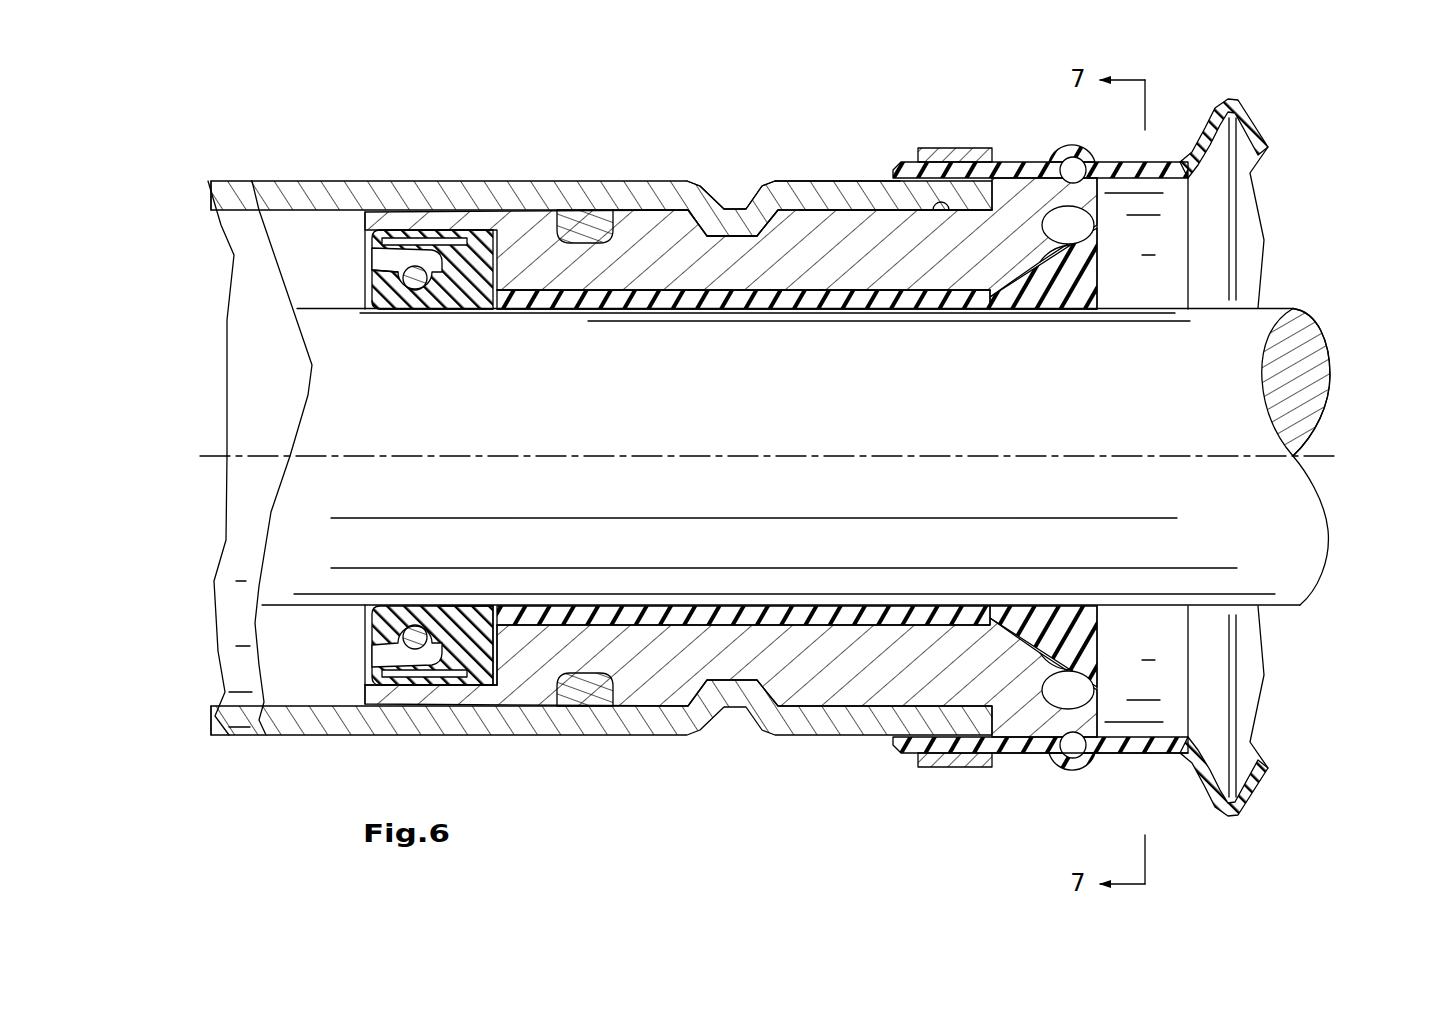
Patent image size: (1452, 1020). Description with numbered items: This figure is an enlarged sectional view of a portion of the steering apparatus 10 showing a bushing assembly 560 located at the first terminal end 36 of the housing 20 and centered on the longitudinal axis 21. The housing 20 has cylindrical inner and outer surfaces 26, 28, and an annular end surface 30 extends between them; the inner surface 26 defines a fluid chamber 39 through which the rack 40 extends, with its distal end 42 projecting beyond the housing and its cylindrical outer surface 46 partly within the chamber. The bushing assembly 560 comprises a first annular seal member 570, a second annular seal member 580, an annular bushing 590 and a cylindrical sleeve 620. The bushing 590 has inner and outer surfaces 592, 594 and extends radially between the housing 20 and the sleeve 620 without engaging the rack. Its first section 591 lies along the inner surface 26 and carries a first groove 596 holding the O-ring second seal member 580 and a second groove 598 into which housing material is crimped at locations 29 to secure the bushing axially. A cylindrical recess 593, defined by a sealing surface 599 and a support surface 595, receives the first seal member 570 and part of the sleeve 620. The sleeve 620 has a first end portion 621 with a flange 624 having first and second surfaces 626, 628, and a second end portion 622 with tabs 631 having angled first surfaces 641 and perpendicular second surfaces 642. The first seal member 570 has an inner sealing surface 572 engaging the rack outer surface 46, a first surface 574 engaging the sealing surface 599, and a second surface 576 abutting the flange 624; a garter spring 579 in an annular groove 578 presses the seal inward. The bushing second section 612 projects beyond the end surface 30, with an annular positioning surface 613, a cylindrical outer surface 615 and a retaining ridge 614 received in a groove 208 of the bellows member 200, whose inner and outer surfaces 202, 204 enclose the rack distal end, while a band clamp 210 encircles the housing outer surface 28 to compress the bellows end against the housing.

The steering apparatus 10 is at (262, 120).
The housing 20 is at (299, 192).
The longitudinal axis 21 is at (1340, 456).
The inner surface 26 is at (283, 212).
The outer surface 28 is at (268, 184).
The deformed material locations 29 is at (733, 203).
The end surface 30 is at (1020, 175).
The first terminal end 36 is at (807, 176).
The fluid chamber 39 is at (312, 672).
The rack 40 is at (1240, 423).
The distal end 42 is at (1283, 304).
The outer surface 46 is at (1277, 607).
The bellows member 200 is at (1260, 97).
The inner surface 202 is at (1252, 736).
The outer surface 204 is at (1124, 755).
The groove 208 is at (1062, 152).
The band clamp 210 is at (937, 762).
The bushing assembly 560 is at (590, 172).
The first annular seal member 570 is at (402, 604).
The inner sealing surface 572 is at (400, 310).
The first surface 574 is at (437, 232).
The second surface 576 is at (476, 608).
The annular groove 578 is at (370, 310).
The garter spring 579 is at (370, 275).
The second annular seal member 580 is at (604, 709).
The annular bushing 590 is at (866, 205).
The first section 591 is at (578, 312).
The inner surface 592 is at (782, 302).
The cylindrical recess 593 is at (481, 690).
The outer surface 594 is at (950, 202).
The support surface 595 is at (416, 291).
The first groove 596 is at (615, 213).
The second groove 598 is at (757, 237).
The sealing surface 599 is at (367, 258).
The second section 612 is at (1102, 223).
The annular surface 613 is at (942, 148).
The retaining ridge 614 is at (1087, 757).
The outer surface 615 is at (1013, 760).
The sleeve 620 is at (690, 288).
The first end portion 621 is at (479, 322).
The second end portion 622 is at (1072, 320).
The flange 624 is at (478, 230).
The first surface 626 is at (432, 230).
The second surface 628 is at (506, 657).
The tabs 631 is at (1050, 235).
The first surfaces 641 is at (1100, 207).
The second surfaces 642 is at (1099, 280).